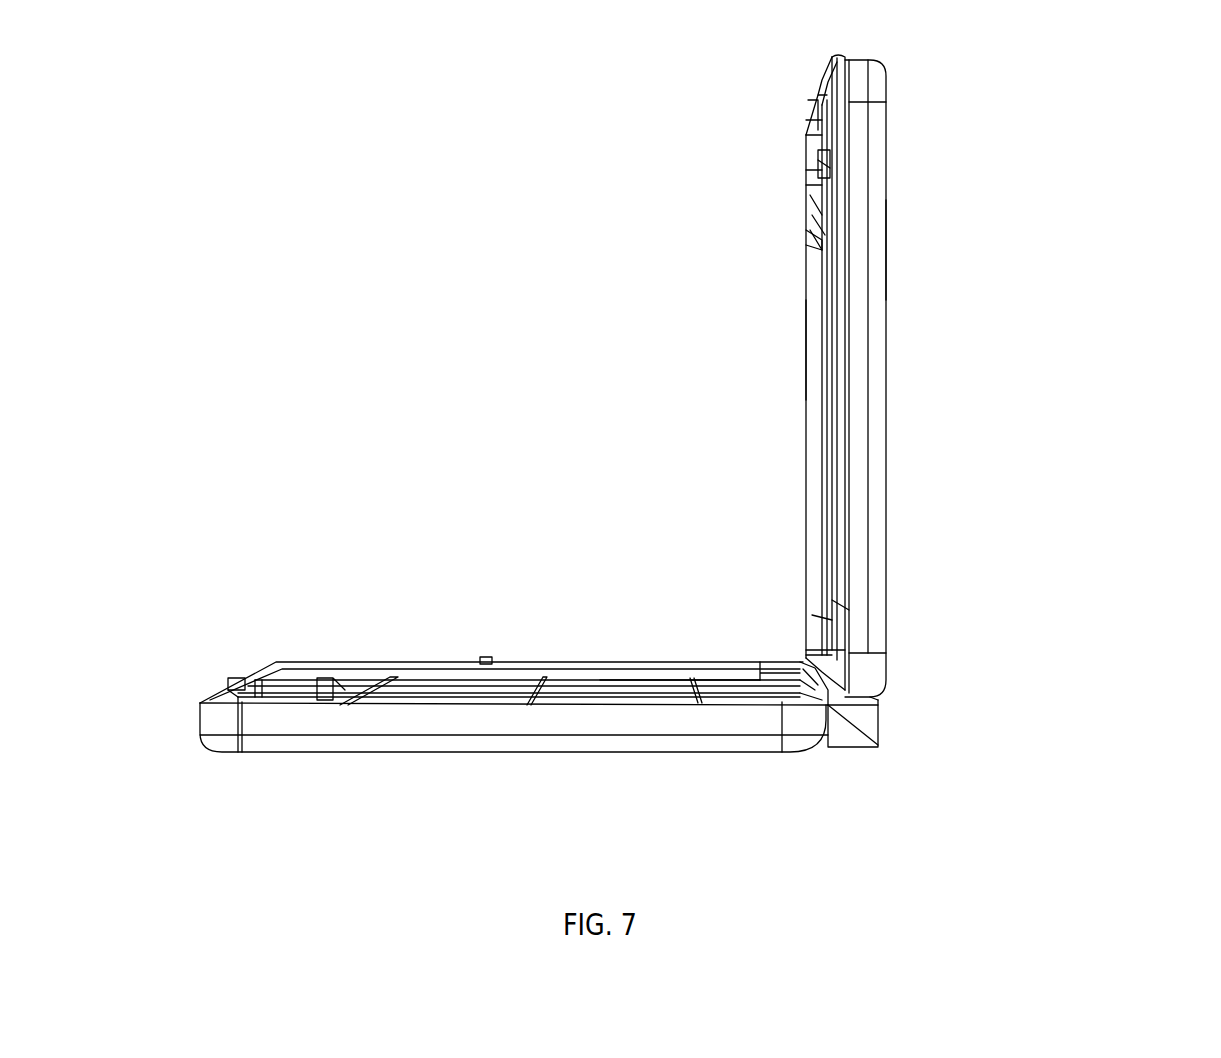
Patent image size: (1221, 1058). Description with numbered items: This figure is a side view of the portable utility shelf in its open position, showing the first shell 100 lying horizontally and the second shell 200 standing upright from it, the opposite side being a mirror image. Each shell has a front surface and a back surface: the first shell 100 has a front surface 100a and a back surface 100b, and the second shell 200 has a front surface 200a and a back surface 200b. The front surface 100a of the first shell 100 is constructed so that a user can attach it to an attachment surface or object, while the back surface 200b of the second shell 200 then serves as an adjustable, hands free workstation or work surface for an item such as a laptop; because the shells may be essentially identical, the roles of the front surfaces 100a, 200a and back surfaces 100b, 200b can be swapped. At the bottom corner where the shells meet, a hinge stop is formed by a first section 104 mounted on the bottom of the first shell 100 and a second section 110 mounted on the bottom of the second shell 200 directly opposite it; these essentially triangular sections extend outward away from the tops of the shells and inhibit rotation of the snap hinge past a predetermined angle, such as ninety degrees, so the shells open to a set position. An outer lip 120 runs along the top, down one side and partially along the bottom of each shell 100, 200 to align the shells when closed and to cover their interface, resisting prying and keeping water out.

The first shell 100 is at (462, 682).
The front surface of first shell 100a is at (545, 755).
The back surface of first shell 100b is at (679, 680).
The first section of hinge stop 104 is at (851, 733).
The second section of hinge stop 110 is at (876, 712).
The outer lip 120 is at (832, 176).
The second shell 200 is at (858, 338).
The front surface of second shell 200a is at (889, 274).
The back surface of second shell 200b is at (805, 367).